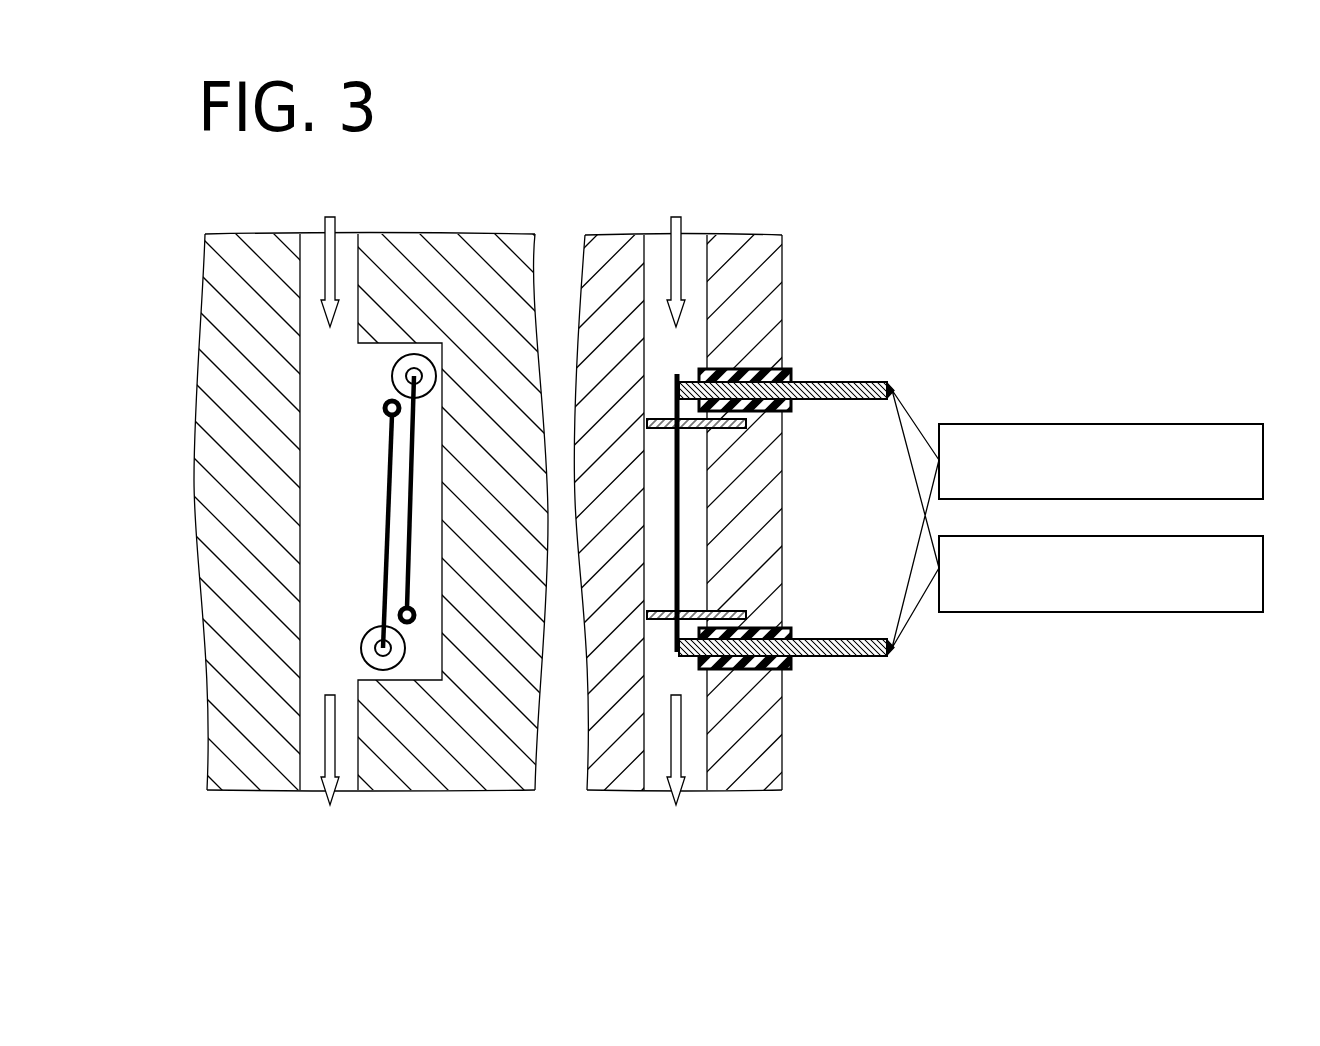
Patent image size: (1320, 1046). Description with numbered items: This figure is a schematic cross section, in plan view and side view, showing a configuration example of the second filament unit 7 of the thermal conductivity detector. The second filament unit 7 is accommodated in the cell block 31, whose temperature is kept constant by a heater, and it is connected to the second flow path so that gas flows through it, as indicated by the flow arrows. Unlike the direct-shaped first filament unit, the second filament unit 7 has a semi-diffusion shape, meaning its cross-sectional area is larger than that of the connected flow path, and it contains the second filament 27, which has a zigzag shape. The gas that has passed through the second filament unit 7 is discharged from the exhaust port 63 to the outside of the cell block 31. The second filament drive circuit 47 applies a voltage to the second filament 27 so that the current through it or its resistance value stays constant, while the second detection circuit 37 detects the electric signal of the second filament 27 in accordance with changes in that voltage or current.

The cell block 31 is at (485, 234).
The second filament unit 7 is at (343, 482).
The second filament 27 is at (380, 522).
The exhaust port 63 is at (349, 782).
The second filament drive circuit 47 is at (1079, 424).
The second detection circuit 37 is at (1080, 612).